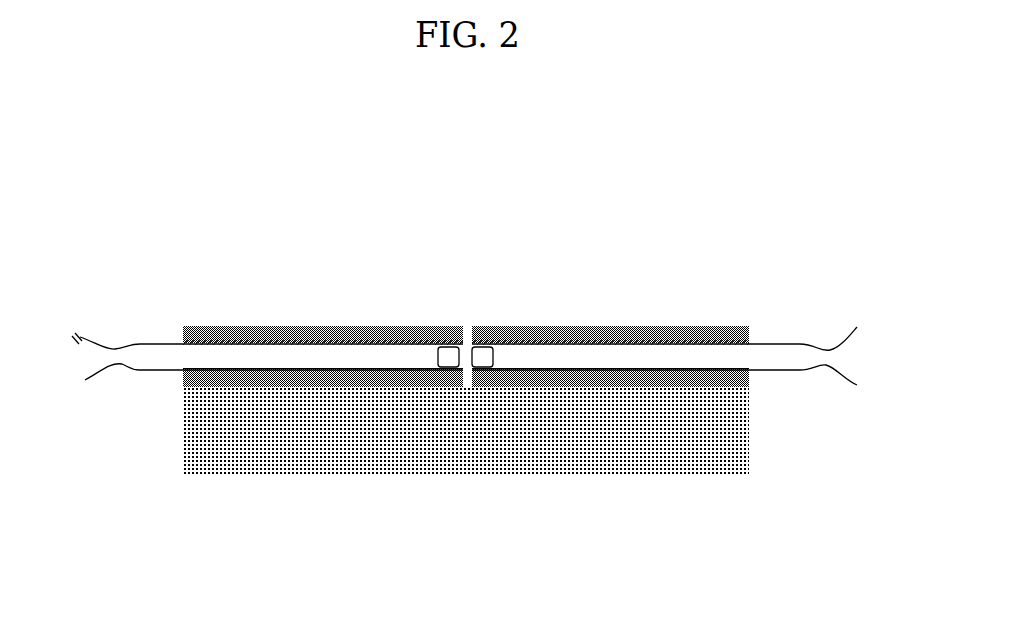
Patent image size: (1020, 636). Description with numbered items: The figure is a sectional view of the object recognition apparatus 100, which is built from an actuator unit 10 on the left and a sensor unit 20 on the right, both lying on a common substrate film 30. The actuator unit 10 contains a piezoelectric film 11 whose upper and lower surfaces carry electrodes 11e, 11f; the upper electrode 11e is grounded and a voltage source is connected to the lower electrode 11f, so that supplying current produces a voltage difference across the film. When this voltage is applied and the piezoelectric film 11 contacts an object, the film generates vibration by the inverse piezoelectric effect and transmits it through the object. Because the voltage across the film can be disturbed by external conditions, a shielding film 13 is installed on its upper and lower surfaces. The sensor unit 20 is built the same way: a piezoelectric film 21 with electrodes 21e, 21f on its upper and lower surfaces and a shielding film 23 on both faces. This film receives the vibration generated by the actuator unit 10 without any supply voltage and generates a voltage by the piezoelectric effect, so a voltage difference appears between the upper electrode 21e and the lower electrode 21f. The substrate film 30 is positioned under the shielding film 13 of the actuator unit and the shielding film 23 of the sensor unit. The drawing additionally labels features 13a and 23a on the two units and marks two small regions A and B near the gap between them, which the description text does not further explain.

The object recognition apparatus 100 is at (356, 182).
The actuator unit 10 is at (231, 289).
The piezoelectric film 11 is at (273, 357).
The electrode 11e is at (166, 343).
The electrode 11f is at (167, 371).
The shielding film 13 is at (325, 378).
The first electrode layer portion 13a is at (398, 378).
The sensor unit 20 is at (708, 289).
The piezoelectric film 21 is at (532, 355).
The electrode 21e is at (767, 343).
The electrode 21f is at (763, 371).
The shielding film 23 is at (583, 380).
The second electrode layer portion 23a is at (653, 372).
The substrate film 30 is at (673, 462).
The region A is at (447, 338).
The region B is at (483, 336).